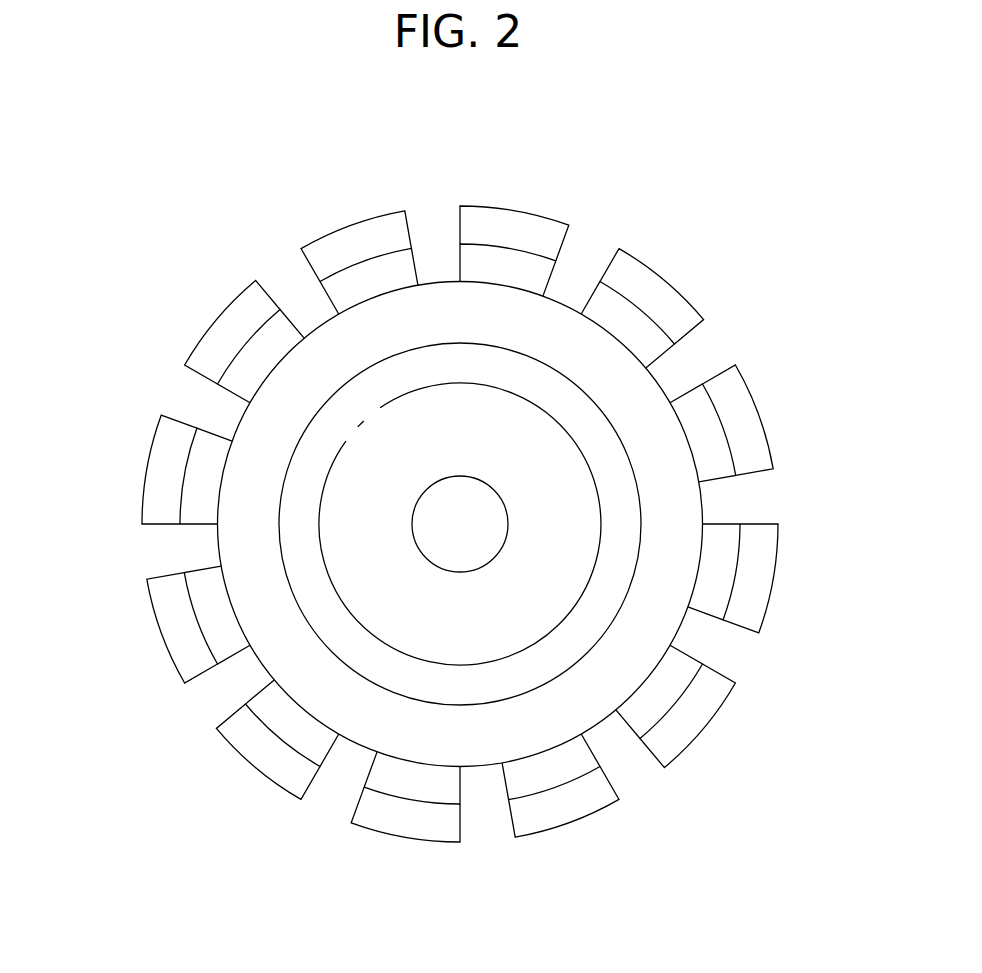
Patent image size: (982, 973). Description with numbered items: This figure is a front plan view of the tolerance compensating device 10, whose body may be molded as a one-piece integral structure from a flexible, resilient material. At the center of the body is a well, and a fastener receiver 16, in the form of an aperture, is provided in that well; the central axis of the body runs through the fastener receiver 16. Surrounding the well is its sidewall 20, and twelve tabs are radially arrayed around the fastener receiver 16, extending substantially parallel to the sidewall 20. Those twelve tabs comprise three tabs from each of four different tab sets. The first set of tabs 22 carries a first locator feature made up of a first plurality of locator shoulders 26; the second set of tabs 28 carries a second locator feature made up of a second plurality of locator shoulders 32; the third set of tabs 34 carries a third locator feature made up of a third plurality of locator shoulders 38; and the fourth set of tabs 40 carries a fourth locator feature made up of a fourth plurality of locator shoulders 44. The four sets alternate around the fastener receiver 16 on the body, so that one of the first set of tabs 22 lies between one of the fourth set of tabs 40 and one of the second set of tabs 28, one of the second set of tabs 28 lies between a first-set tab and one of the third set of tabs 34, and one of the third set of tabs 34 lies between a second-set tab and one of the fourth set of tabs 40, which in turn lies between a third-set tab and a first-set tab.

The tolerance compensating device 10 is at (690, 190).
The fastener receiver 16 is at (503, 502).
The sidewall 20 is at (644, 500).
The first set of tabs 22 is at (512, 260).
The first plurality of locator shoulders 26 is at (483, 220).
The second set of tabs 28 is at (635, 330).
The second plurality of locator shoulders 32 is at (632, 280).
The third set of tabs 34 is at (703, 435).
The third plurality of locator shoulders 38 is at (750, 442).
The fourth set of tabs 40 is at (718, 558).
The fourth plurality of locator shoulders 44 is at (755, 595).